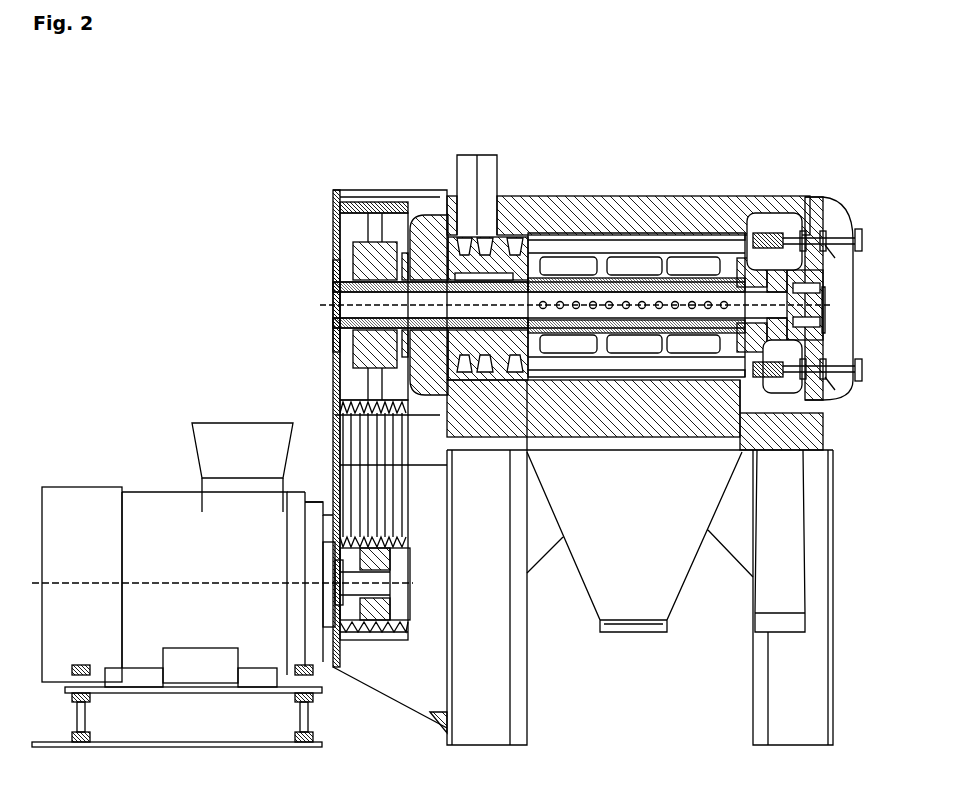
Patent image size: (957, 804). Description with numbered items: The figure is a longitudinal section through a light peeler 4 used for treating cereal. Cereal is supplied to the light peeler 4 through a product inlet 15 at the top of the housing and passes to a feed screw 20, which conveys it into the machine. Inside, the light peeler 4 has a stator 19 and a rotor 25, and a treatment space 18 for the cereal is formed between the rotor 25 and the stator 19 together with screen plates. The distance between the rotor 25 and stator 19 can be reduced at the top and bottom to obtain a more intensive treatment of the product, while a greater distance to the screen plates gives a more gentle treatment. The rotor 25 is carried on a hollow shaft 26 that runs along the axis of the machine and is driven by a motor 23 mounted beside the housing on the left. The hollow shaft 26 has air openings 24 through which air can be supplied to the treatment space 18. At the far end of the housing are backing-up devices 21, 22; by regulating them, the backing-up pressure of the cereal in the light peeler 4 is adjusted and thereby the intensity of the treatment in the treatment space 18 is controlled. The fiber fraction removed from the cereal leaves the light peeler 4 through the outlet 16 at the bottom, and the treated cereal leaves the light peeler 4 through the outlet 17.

The light peeler 4 is at (197, 263).
The product inlet 15 is at (478, 155).
The outlet 16 is at (632, 632).
The outlet 17 is at (777, 634).
The treatment space 18 is at (633, 238).
The stator 19 is at (535, 197).
The feed screw 20 is at (583, 237).
The backing-up device 21 is at (825, 405).
The backing-up device 22 is at (783, 200).
The motor 23 is at (160, 490).
The air openings 24 is at (683, 273).
The rotor 25 is at (718, 248).
The hollow shaft 26 is at (345, 302).